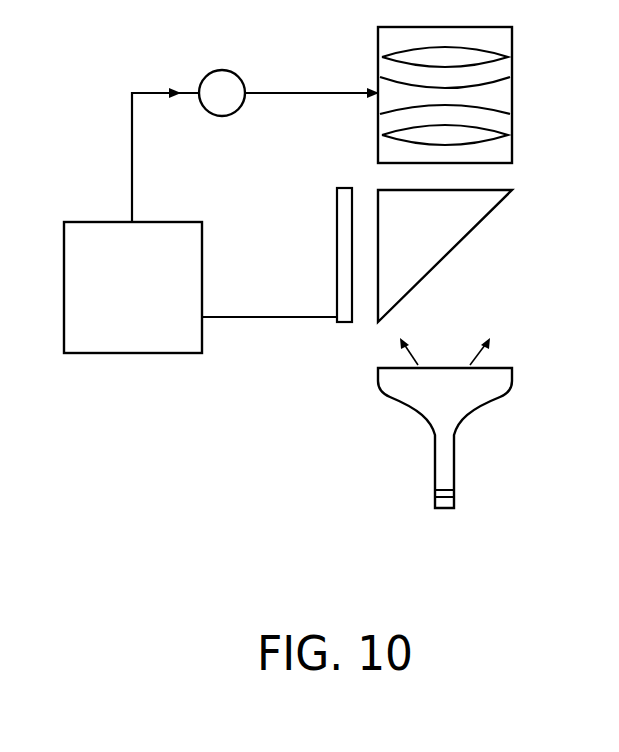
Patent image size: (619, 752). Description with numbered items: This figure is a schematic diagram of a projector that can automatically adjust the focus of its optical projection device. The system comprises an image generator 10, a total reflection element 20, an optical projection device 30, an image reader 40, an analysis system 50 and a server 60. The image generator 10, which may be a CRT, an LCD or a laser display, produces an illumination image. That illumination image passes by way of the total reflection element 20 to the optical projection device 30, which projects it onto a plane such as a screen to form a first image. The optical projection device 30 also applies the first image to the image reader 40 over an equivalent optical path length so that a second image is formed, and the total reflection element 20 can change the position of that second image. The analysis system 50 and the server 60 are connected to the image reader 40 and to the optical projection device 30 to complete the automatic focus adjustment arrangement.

The image generator 10 is at (454, 477).
The total reflection element 20 is at (512, 190).
The optical projection device 30 is at (512, 97).
The image reader 40 is at (343, 322).
The analysis system 50 is at (132, 353).
The server 60 is at (222, 116).